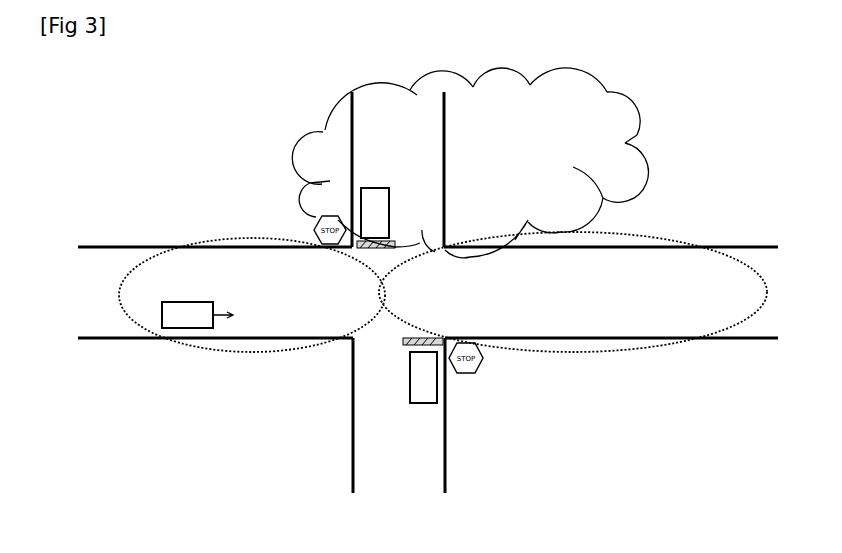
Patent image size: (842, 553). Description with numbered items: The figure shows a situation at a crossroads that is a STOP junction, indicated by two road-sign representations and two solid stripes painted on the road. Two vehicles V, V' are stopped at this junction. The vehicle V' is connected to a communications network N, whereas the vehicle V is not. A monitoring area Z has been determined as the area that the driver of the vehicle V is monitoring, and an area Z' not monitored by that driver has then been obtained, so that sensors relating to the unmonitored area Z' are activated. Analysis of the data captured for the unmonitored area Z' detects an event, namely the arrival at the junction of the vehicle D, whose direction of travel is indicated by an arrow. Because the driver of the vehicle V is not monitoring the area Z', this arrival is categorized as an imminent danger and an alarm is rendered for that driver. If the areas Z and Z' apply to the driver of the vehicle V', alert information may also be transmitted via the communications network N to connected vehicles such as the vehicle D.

The communications network N is at (310, 131).
The unmonitored area Z' is at (252, 282).
The monitoring area Z is at (573, 282).
The vehicle D is at (197, 315).
The vehicle V' is at (375, 213).
The vehicle V is at (423, 377).